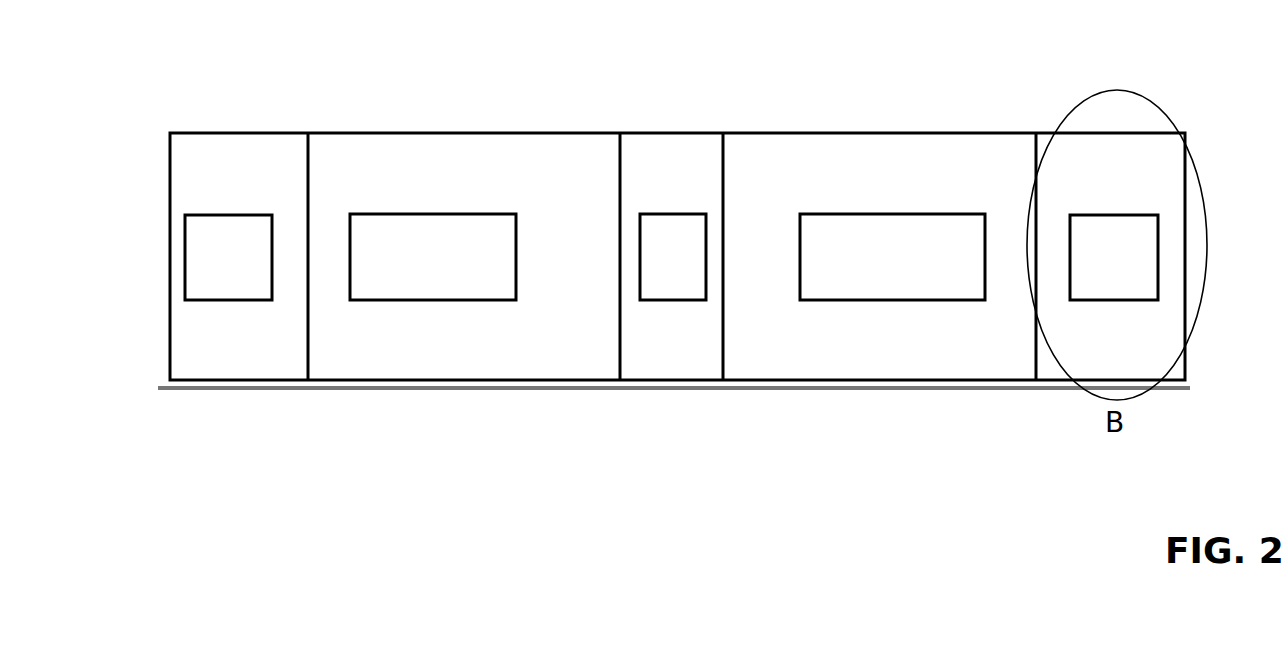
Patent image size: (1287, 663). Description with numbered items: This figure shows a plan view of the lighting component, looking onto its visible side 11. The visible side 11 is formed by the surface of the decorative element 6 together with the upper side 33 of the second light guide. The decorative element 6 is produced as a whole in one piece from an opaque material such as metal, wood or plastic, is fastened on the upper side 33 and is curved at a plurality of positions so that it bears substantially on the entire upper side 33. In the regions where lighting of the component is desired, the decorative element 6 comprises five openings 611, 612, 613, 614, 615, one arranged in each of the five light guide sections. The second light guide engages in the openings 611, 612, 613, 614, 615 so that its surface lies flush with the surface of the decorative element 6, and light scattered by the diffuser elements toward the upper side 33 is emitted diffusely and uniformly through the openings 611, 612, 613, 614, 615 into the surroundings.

The decorative element 6 is at (235, 172).
The visible side 11 is at (499, 355).
The upper side 33 is at (222, 253).
The opening 611 is at (248, 302).
The opening 612 is at (428, 213).
The opening 613 is at (682, 217).
The opening 614 is at (926, 215).
The opening 615 is at (1120, 215).